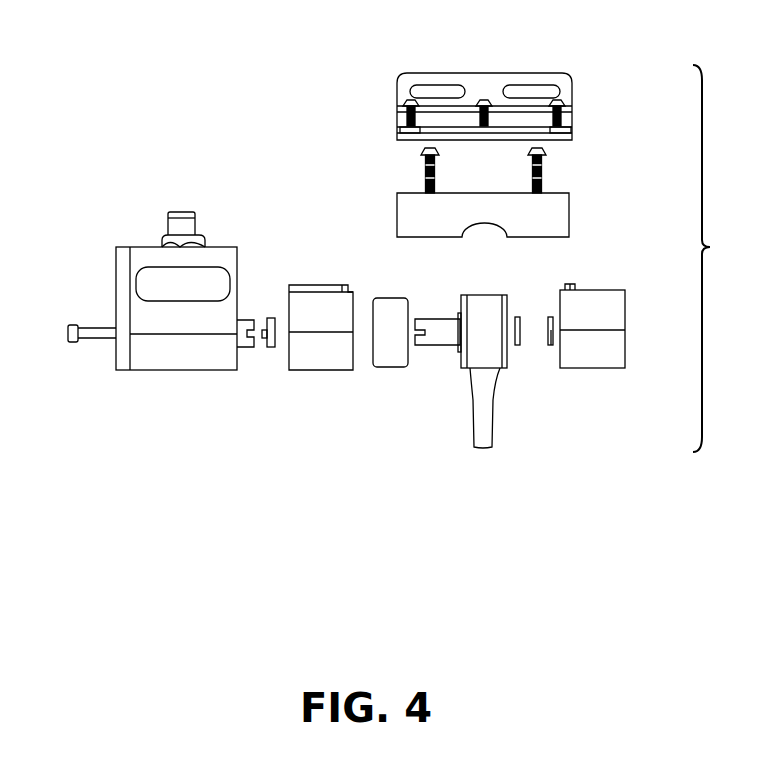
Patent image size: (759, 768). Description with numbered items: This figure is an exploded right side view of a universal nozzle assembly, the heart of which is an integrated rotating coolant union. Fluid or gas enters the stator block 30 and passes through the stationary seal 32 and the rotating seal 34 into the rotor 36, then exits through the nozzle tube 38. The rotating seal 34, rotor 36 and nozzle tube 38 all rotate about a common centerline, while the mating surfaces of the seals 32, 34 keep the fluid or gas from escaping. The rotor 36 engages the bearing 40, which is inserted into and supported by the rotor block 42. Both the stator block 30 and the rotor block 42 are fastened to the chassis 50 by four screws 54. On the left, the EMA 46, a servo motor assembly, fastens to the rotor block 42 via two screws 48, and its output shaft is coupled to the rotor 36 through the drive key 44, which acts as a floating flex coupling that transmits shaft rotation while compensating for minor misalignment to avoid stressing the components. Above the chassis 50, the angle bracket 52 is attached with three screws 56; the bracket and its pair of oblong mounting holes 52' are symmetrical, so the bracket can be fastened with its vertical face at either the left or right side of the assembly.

The stator block 30 is at (598, 370).
The stationary seal 32 is at (550, 346).
The rotating seal 34 is at (518, 346).
The rotor 36 is at (437, 346).
The nozzle tube 38 is at (485, 450).
The bearing 40 is at (392, 369).
The rotor block 42 is at (315, 372).
The drive key 44 is at (268, 352).
The EMA (servo motor assembly) 46 is at (145, 372).
The screws 48 is at (67, 342).
The chassis 50 is at (571, 216).
The angle bracket 52 is at (527, 106).
The oblong mounting holes 52' is at (448, 66).
The screws 54 is at (421, 166).
The screws 56 is at (405, 103).